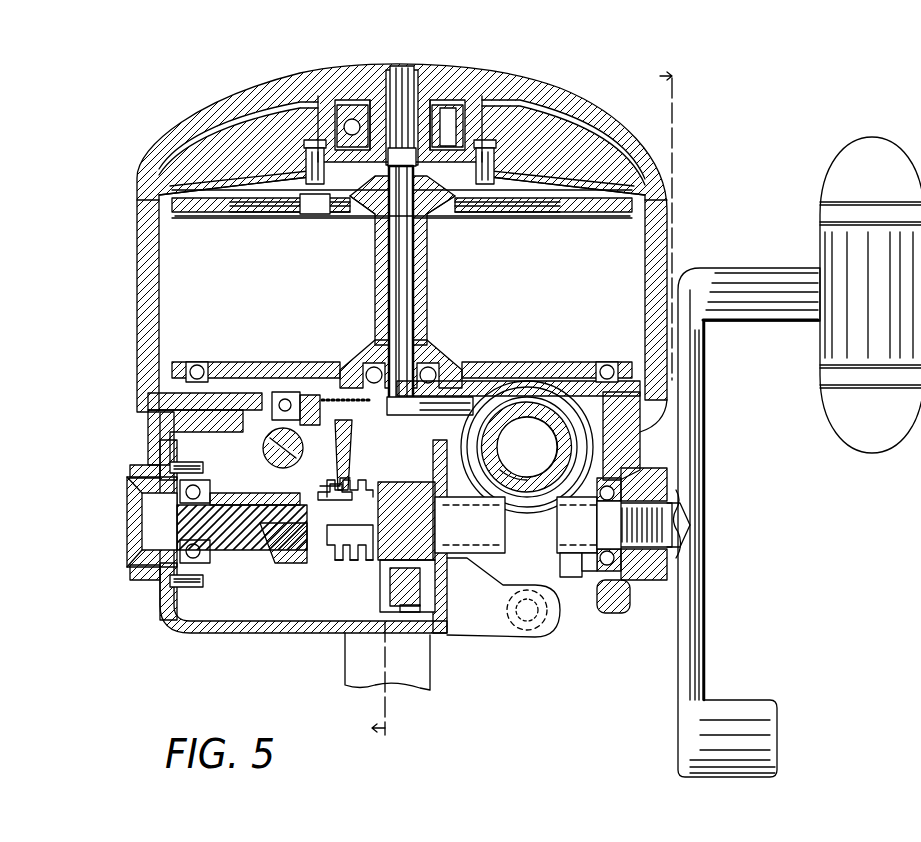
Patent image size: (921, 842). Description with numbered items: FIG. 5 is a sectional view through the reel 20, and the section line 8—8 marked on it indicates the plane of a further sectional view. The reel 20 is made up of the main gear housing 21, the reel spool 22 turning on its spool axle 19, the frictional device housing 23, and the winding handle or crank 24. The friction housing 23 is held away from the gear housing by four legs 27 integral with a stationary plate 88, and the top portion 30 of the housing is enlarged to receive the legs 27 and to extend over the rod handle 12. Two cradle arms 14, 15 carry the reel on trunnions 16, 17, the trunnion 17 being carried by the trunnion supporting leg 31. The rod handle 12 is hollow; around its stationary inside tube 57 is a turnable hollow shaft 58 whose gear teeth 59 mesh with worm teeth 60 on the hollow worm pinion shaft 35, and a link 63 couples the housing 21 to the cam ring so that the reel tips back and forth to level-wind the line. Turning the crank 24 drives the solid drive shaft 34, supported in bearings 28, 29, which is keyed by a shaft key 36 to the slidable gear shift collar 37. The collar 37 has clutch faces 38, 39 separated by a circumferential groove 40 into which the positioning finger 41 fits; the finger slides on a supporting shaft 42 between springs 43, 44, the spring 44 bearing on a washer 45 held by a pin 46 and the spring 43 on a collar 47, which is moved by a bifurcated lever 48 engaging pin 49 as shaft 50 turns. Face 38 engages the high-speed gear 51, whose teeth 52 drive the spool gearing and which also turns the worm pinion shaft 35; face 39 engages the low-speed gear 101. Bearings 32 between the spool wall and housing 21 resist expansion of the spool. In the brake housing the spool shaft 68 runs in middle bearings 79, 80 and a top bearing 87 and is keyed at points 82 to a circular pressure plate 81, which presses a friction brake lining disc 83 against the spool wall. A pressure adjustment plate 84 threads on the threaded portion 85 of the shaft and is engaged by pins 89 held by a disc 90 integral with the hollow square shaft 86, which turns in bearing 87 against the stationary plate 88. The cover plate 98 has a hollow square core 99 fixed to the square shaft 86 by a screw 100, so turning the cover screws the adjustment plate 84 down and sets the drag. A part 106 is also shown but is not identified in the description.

The section line 8— 8 is at (509, 399).
The rod handle 12 is at (530, 416).
The cradle arm 14 is at (132, 468).
The cradle arm 15 is at (644, 472).
The trunnion 16 is at (130, 545).
The trunnion 17 is at (672, 585).
The spool axle 19 is at (429, 308).
The reel 20 is at (250, 634).
The main gear housing 21 is at (448, 596).
The reel spool 22 is at (608, 214).
The frictional device housing 23 is at (600, 128).
The winding handle 24 is at (830, 190).
The supporting legs 27 is at (137, 262).
The bearing 28 is at (650, 500).
The bearing 29 is at (212, 560).
The top portion of main gear housing 30 is at (552, 382).
The trunnion supporting leg 31 is at (628, 438).
The bearings 32 is at (204, 370).
The solid drive shaft 34 is at (244, 540).
The worm pinion shaft 35 is at (588, 568).
The shaft key 36 is at (328, 492).
The gear shift collar 37 is at (340, 564).
The clutch face 38 is at (370, 564).
The clutch face 39 is at (332, 562).
The circumferential groove 40 is at (354, 562).
The positioning finger 41 is at (346, 486).
The supporting shaft 42 is at (258, 404).
The spring 43 is at (310, 412).
The spring 44 is at (352, 404).
The washer 45 is at (370, 412).
The pin 46 is at (430, 407).
The collar 47 is at (282, 400).
The bifurcated lever 48 is at (266, 442).
The pin 49 is at (282, 404).
The shaft 50 is at (268, 460).
The high-speed gear 51 is at (392, 606).
The teeth 52 is at (425, 598).
The stationary inside tube 57 is at (552, 426).
The turnable hollow shaft 58 is at (500, 448).
The gear teeth 59 is at (496, 478).
The worm teeth 60 is at (570, 560).
The link 63 is at (555, 597).
The spool shaft 68 is at (444, 266).
The middle bearing 79 is at (440, 376).
The middle bearing 80 is at (360, 200).
The pressure plate 81 is at (228, 216).
The circumferential engagement points 82 is at (318, 198).
The friction brake lining disc 83 is at (250, 214).
The pressure adjustment plate 84 is at (282, 205).
The threaded portion 85 is at (445, 105).
The hollow square shaft 86 is at (360, 100).
The top bearing 87 is at (480, 100).
The stationary plate 88 is at (162, 166).
The pins 89 is at (575, 122).
The disc 90 is at (314, 140).
The cover plate 98 is at (455, 100).
The hollow square core portion 99 is at (400, 68).
The screw 100 is at (412, 70).
The low-speed gear 101 is at (292, 564).
The foot 106 is at (432, 668).